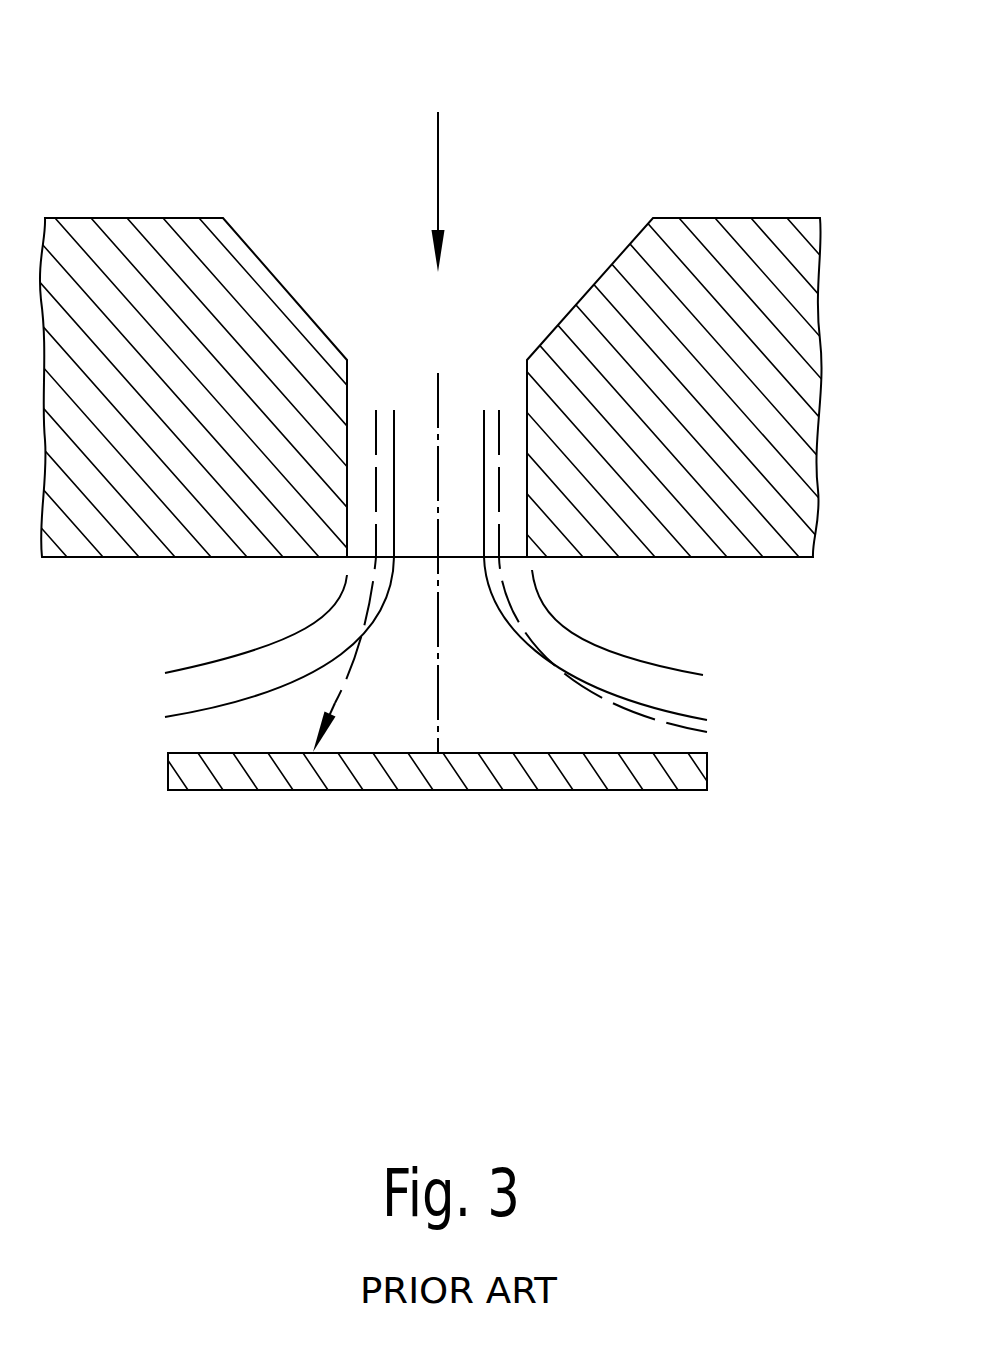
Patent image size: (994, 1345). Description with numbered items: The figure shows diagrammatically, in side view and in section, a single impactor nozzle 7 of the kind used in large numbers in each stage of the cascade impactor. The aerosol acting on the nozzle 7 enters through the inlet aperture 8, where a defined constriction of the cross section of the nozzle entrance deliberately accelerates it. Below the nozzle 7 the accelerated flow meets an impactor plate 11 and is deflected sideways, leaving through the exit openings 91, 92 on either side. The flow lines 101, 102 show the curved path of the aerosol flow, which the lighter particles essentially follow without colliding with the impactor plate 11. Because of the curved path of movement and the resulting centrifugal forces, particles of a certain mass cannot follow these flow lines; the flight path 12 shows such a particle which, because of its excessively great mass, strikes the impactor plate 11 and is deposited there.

The impactor nozzle 7 is at (587, 150).
The inlet aperture 8 is at (500, 332).
The exit opening 91 is at (140, 652).
The exit opening 92 is at (810, 650).
The flow lines 101 is at (235, 705).
The flow lines 102 is at (617, 697).
The impactor plate 11 is at (603, 763).
The flight path of a striking particle 12 is at (335, 708).